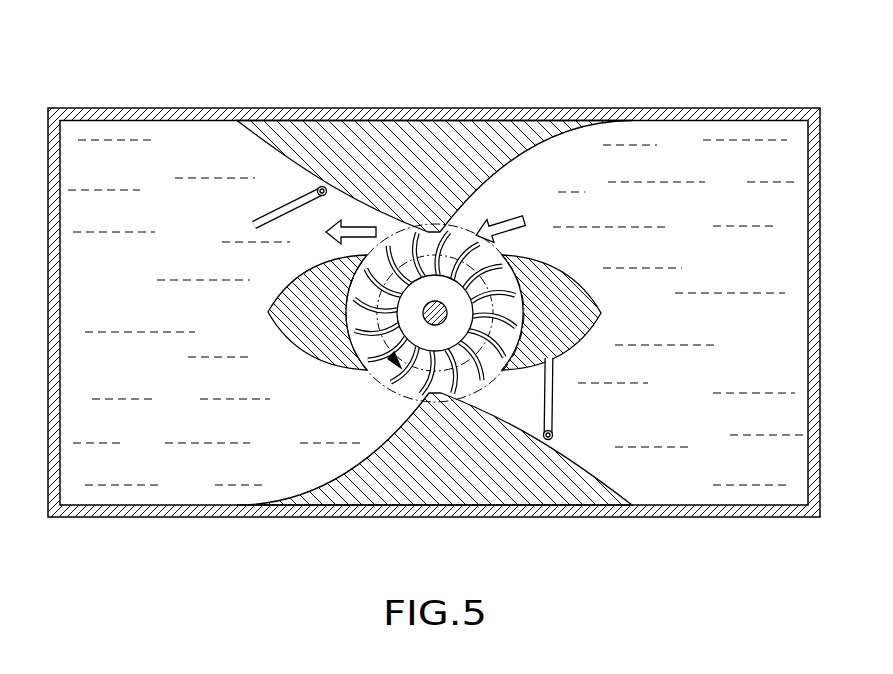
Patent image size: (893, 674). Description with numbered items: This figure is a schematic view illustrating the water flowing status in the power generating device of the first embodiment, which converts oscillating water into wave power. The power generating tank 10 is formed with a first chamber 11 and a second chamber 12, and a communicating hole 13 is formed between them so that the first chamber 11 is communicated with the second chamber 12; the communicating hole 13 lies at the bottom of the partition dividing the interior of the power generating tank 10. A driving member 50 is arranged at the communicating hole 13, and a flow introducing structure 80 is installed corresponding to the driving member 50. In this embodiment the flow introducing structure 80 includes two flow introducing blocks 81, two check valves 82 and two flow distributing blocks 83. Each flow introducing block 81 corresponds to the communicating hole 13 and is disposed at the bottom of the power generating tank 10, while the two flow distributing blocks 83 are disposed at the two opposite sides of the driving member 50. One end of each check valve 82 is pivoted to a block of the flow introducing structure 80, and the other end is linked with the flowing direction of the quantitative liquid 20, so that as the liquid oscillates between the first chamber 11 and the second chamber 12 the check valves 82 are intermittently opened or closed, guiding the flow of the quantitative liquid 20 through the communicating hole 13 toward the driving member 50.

The power generating tank 10 is at (462, 108).
The first chamber 11 is at (722, 150).
The second chamber 12 is at (147, 149).
The communicating hole 13 is at (403, 248).
The quantitative liquid 20 is at (656, 185).
The driving member 50 is at (445, 352).
The flow introducing structure 80 is at (302, 347).
The flow introducing block 81 is at (345, 138).
The check valve 82 is at (275, 222).
The flow distributing block 83 is at (288, 290).